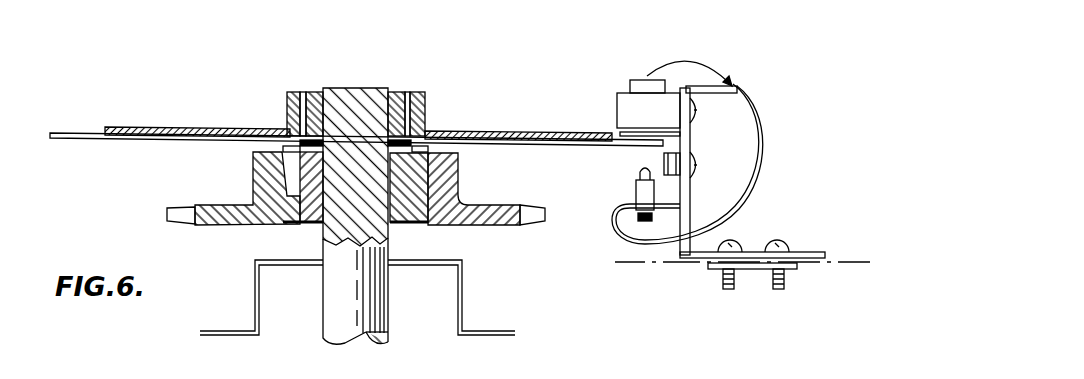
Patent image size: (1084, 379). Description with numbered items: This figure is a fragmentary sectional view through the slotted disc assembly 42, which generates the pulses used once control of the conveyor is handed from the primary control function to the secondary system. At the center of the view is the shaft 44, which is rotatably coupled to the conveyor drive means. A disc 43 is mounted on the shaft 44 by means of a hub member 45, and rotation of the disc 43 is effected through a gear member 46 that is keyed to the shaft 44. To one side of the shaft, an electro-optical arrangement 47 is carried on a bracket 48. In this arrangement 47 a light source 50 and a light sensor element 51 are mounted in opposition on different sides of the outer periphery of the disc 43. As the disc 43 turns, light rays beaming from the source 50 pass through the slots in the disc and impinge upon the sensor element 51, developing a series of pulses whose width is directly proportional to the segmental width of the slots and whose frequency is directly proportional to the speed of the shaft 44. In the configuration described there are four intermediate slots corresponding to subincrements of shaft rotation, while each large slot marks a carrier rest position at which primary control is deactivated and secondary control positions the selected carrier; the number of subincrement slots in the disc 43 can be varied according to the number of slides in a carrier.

The slotted disc assembly 42 is at (453, 104).
The disc 43 is at (229, 114).
The shaft 44 is at (359, 90).
The hub member 45 is at (318, 92).
The gear member 46 is at (483, 212).
The electro-optical arrangement 47 is at (756, 137).
The bracket 48 is at (683, 201).
The light source 50 is at (640, 193).
The light sensor element 51 is at (617, 104).